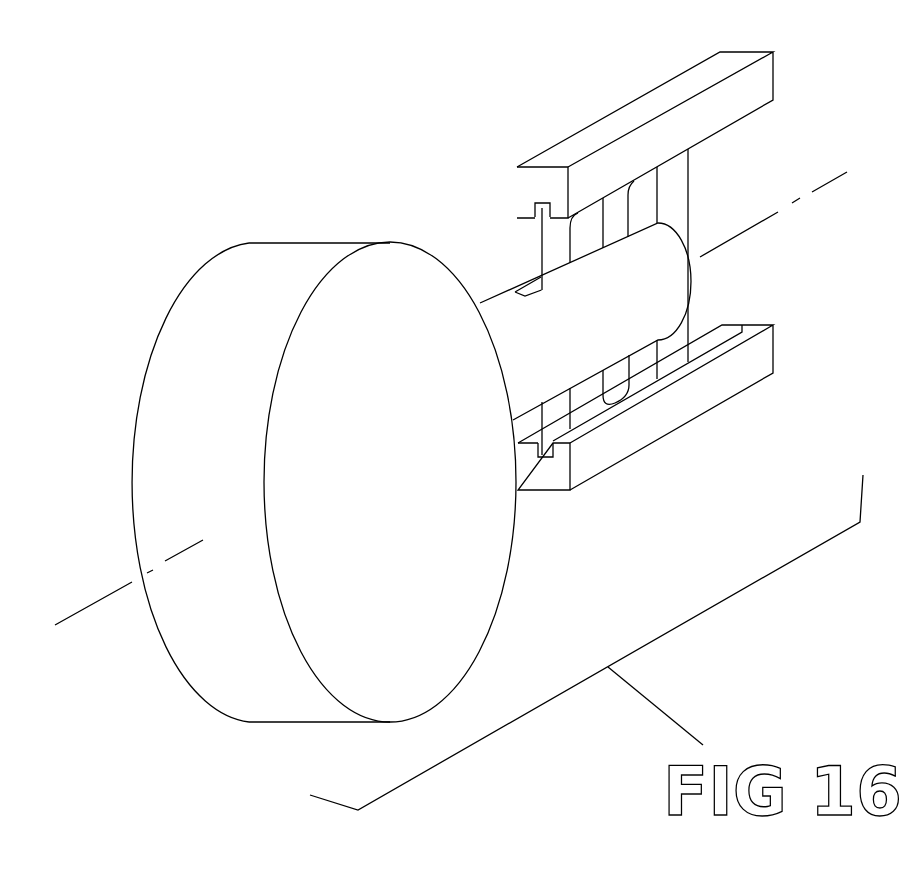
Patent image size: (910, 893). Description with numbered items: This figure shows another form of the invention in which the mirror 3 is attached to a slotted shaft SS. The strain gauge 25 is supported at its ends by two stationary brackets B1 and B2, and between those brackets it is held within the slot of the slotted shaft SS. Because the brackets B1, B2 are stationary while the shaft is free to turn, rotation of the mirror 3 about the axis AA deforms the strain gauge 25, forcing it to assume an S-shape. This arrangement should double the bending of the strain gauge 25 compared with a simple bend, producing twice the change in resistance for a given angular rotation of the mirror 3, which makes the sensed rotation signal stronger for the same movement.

The mirror 3 is at (401, 503).
The slotted shaft SS is at (600, 342).
The axis AA is at (113, 588).
The stationary bracket B1 is at (773, 350).
The stationary bracket B2 is at (773, 73).
The strain gauge 25 is at (715, 183).